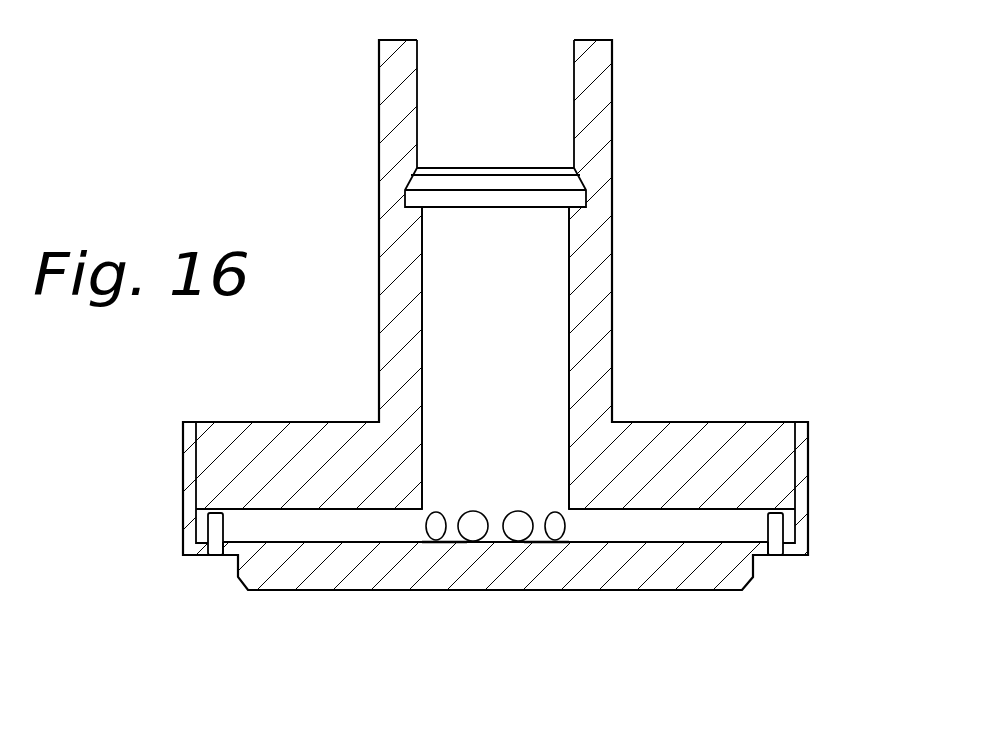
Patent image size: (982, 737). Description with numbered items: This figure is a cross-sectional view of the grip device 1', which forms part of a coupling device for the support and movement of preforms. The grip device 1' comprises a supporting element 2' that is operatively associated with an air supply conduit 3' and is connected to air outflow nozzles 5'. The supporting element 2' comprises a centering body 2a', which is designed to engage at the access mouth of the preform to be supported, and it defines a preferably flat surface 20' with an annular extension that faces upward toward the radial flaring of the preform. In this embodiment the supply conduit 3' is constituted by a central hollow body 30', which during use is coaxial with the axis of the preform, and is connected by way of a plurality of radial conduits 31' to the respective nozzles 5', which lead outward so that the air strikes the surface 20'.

The grip device 1' is at (540, 348).
The supporting element 2' is at (540, 348).
The air supply conduit 3' is at (563, 358).
The central hollow body 30' is at (450, 237).
The radial conduits 31' is at (486, 499).
The centering body 2a' is at (495, 599).
The air outflow nozzle 5' is at (489, 584).
The flat surface 20' is at (543, 528).